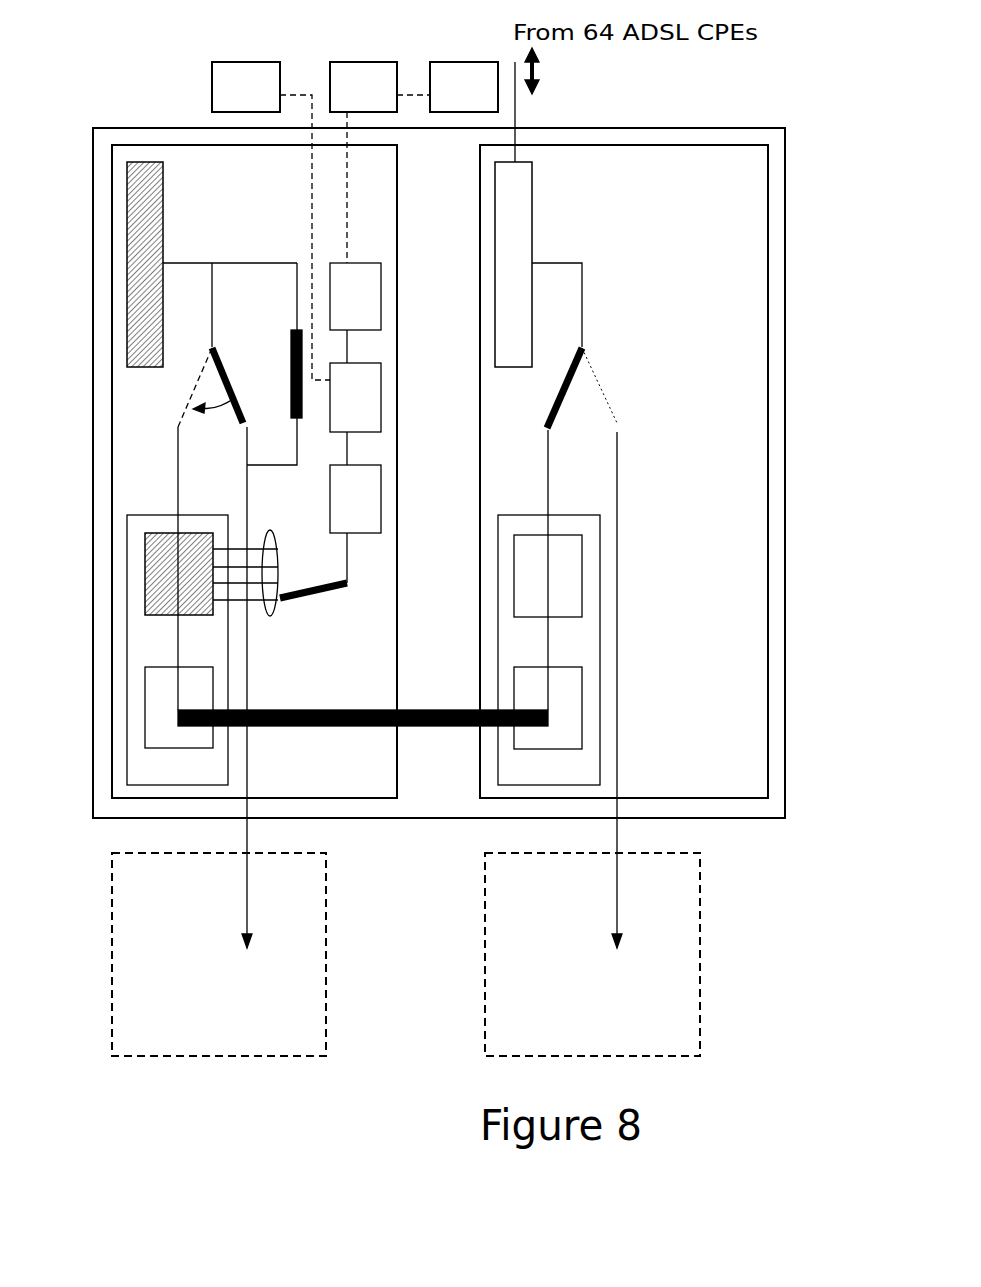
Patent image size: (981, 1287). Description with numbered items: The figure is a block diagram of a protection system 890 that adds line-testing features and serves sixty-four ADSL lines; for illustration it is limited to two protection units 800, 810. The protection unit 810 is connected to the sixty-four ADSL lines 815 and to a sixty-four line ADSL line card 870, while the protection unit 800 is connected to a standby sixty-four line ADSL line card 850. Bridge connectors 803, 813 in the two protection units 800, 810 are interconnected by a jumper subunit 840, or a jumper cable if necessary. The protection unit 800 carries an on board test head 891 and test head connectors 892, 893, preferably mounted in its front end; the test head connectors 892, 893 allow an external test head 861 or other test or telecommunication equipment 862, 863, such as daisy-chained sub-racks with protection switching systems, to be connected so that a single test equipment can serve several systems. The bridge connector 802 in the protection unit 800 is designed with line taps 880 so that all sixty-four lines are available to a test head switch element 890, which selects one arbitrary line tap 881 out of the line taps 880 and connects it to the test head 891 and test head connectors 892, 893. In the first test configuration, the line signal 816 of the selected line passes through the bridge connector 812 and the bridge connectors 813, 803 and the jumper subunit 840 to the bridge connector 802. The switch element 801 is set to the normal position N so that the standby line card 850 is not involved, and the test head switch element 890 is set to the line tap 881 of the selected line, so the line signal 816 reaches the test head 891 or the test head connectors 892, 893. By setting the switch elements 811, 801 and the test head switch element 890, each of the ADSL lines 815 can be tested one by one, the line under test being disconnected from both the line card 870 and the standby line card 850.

The protection unit 800 is at (135, 150).
The protection unit 810 is at (700, 145).
The protection system 890 is at (181, 124).
The switch element 801 is at (228, 382).
The switch element 811 is at (577, 382).
The bridge connector 802 is at (145, 578).
The bridge connector 803 is at (145, 698).
The bridge connector 812 is at (582, 585).
The bridge connector 813 is at (582, 717).
The ADSL lines 815 is at (517, 108).
The line signal 816 is at (538, 80).
The jumper subunit 840 is at (293, 727).
The standby ADSL line card 850 is at (326, 912).
The ADSL line card 870 is at (700, 912).
The external test head 861 is at (212, 78).
The telecommunication equipment 862 is at (330, 78).
The telecommunication equipment 863 is at (430, 78).
The line taps 880 is at (273, 540).
The line tap 881 is at (257, 603).
The test head 891 is at (381, 515).
The test head connector 892 is at (381, 413).
The test head connector 893 is at (381, 312).